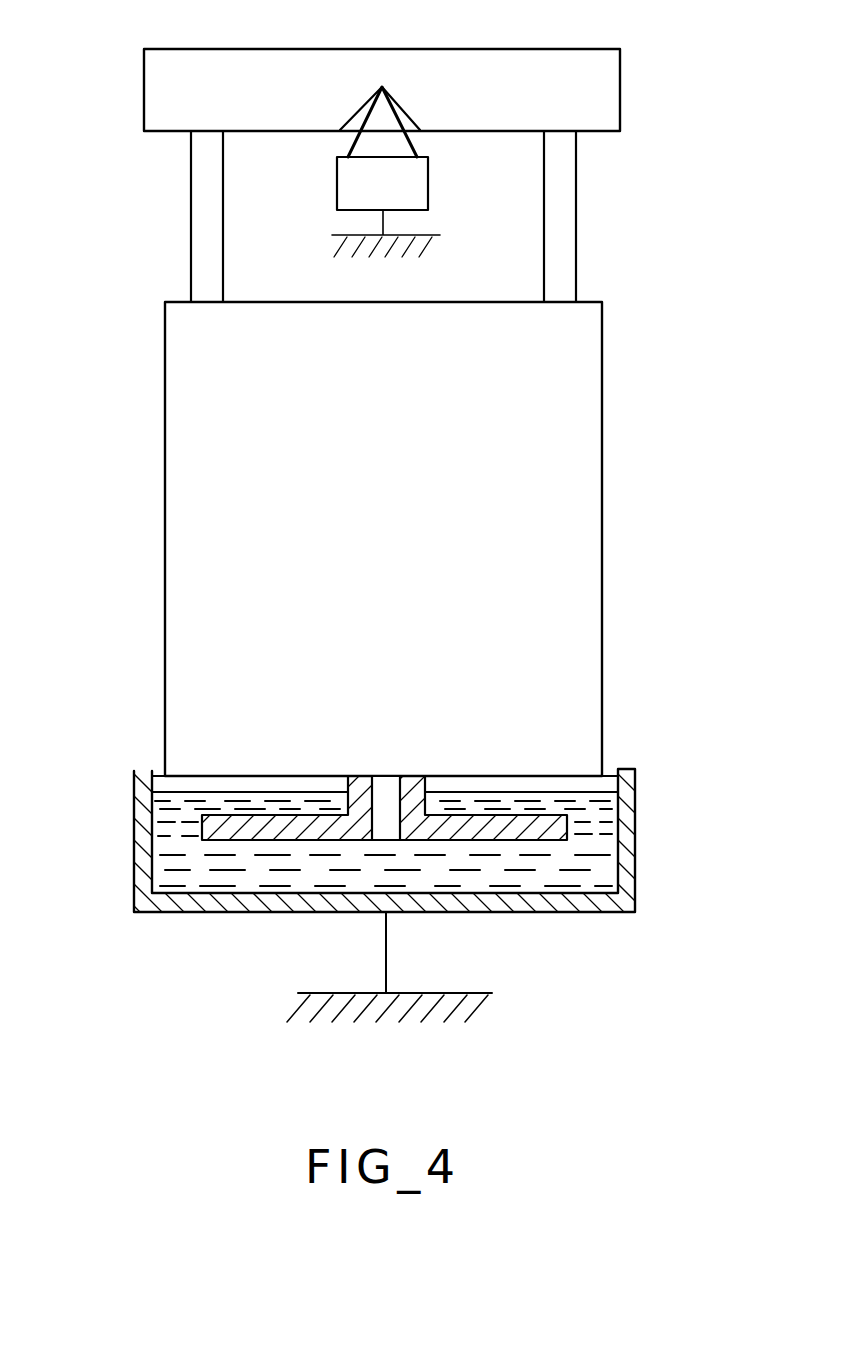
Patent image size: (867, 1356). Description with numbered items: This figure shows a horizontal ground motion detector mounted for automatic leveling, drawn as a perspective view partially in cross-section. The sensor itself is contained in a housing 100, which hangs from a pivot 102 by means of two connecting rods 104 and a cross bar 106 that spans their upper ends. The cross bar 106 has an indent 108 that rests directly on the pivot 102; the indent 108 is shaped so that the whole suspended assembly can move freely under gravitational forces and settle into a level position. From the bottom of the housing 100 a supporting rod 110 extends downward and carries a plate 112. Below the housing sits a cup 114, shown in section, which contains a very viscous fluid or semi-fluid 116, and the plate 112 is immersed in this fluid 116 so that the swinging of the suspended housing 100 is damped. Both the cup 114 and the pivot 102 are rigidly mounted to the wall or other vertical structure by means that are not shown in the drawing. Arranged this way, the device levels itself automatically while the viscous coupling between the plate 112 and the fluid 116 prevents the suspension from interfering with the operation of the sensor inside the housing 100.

The housing 100 is at (603, 522).
The pivot 102 is at (415, 141).
The connecting rods 104 is at (603, 218).
The cross bar 106 is at (580, 49).
The indent 108 is at (360, 107).
The supporting rod 110 is at (358, 790).
The plate 112 is at (202, 826).
The cup 114 is at (627, 808).
The viscous fluid 116 is at (597, 842).